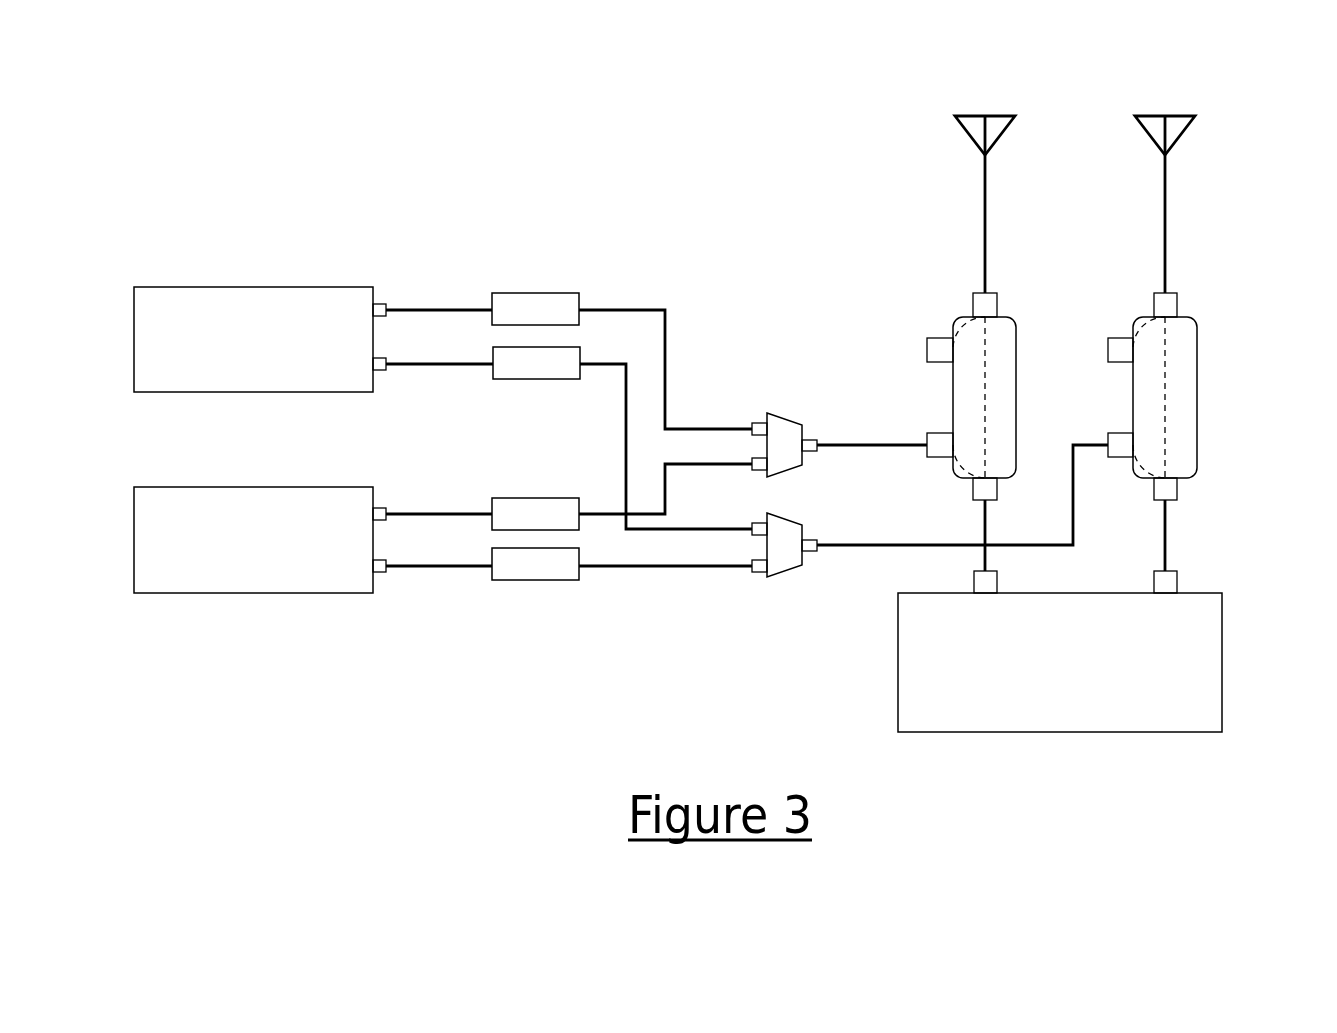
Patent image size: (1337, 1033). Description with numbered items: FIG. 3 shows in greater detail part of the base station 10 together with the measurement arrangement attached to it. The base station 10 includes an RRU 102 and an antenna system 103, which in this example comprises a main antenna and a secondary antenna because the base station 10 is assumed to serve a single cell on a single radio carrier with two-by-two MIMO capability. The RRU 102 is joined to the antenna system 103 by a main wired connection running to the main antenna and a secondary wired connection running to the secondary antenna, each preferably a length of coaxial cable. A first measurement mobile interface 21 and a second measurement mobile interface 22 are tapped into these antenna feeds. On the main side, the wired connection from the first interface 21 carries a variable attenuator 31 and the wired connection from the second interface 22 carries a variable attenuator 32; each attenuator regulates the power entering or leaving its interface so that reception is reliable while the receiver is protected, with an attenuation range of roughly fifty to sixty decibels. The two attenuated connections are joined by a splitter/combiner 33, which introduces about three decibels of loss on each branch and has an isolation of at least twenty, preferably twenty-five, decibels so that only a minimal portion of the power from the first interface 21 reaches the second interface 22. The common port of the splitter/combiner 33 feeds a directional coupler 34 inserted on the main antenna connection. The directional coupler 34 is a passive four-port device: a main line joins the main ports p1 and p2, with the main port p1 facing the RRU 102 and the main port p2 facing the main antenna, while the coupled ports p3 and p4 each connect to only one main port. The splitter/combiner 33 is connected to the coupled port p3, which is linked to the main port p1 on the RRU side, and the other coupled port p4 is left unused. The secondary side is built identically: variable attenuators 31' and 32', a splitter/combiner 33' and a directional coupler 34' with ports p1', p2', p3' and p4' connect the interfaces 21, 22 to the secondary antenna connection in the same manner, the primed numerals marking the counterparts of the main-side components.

The base station 10 is at (1252, 250).
The first measurement mobile interface 21 is at (253, 286).
The second measurement mobile interface 22 is at (259, 485).
The variable attenuator 31 is at (622, 336).
The variable attenuator 31' is at (618, 438).
The variable attenuator 32 is at (622, 489).
The variable attenuator 32' is at (622, 595).
The splitter/combiner 33 is at (839, 421).
The splitter/combiner 33' is at (930, 536).
The directional coupler 34 is at (1010, 397).
The directional coupler 34' is at (1194, 397).
The main port p1 is at (1011, 497).
The main port p2 is at (1008, 300).
The coupled port p3 is at (935, 469).
The coupled port p4 is at (934, 330).
The main port p1' is at (1194, 497).
The main port p2' is at (1191, 300).
The coupled port p3' is at (1115, 469).
The coupled port p4' is at (1114, 330).
The RRU 102 is at (1222, 665).
The antenna system 103 is at (1026, 95).